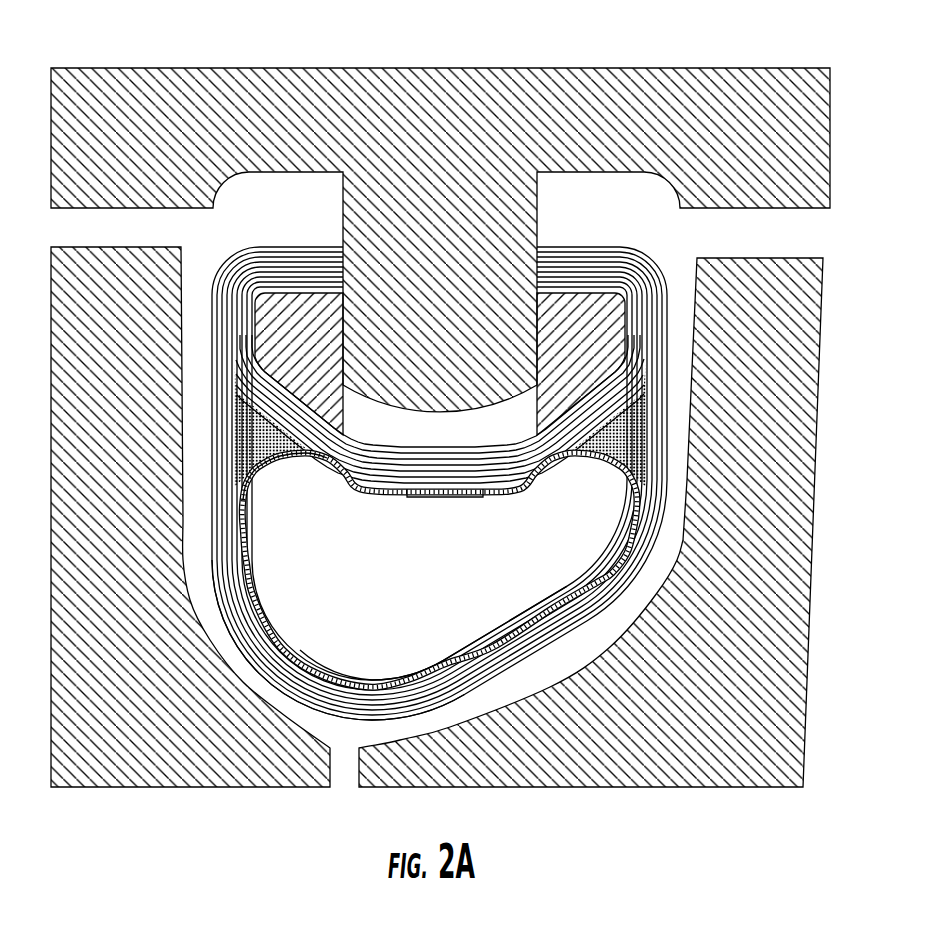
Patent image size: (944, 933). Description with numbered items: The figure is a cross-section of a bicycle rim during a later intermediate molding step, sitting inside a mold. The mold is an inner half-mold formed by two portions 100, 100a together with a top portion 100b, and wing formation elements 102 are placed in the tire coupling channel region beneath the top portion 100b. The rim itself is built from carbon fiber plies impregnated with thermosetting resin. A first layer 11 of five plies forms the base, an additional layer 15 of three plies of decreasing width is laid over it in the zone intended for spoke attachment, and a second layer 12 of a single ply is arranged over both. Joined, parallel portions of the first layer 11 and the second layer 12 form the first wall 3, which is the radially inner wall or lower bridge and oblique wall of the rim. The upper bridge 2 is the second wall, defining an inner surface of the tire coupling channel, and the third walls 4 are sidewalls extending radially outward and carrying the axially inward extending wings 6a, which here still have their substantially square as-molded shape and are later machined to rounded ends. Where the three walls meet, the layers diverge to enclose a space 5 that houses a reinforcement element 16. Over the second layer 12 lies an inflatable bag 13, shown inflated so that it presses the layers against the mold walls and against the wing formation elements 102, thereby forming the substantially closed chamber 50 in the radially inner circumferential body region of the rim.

The top portion 100b is at (413, 97).
The portion of the inner half-mold 100 is at (177, 773).
The portion of the inner half-mold 100a is at (553, 773).
The wing formation element 102 is at (330, 405).
The upper bridge 2 is at (445, 460).
The first wall 3 is at (317, 720).
The third wall 4 is at (210, 297).
The space 5 is at (643, 410).
The substantially square shaped wing 6a is at (330, 263).
The first layer 11 is at (660, 327).
The second layer 12 is at (260, 470).
The inflatable bag 13 is at (407, 497).
The additional layer 15 is at (377, 690).
The reinforcement element 16 is at (233, 427).
The substantially closed chamber 50 is at (480, 569).